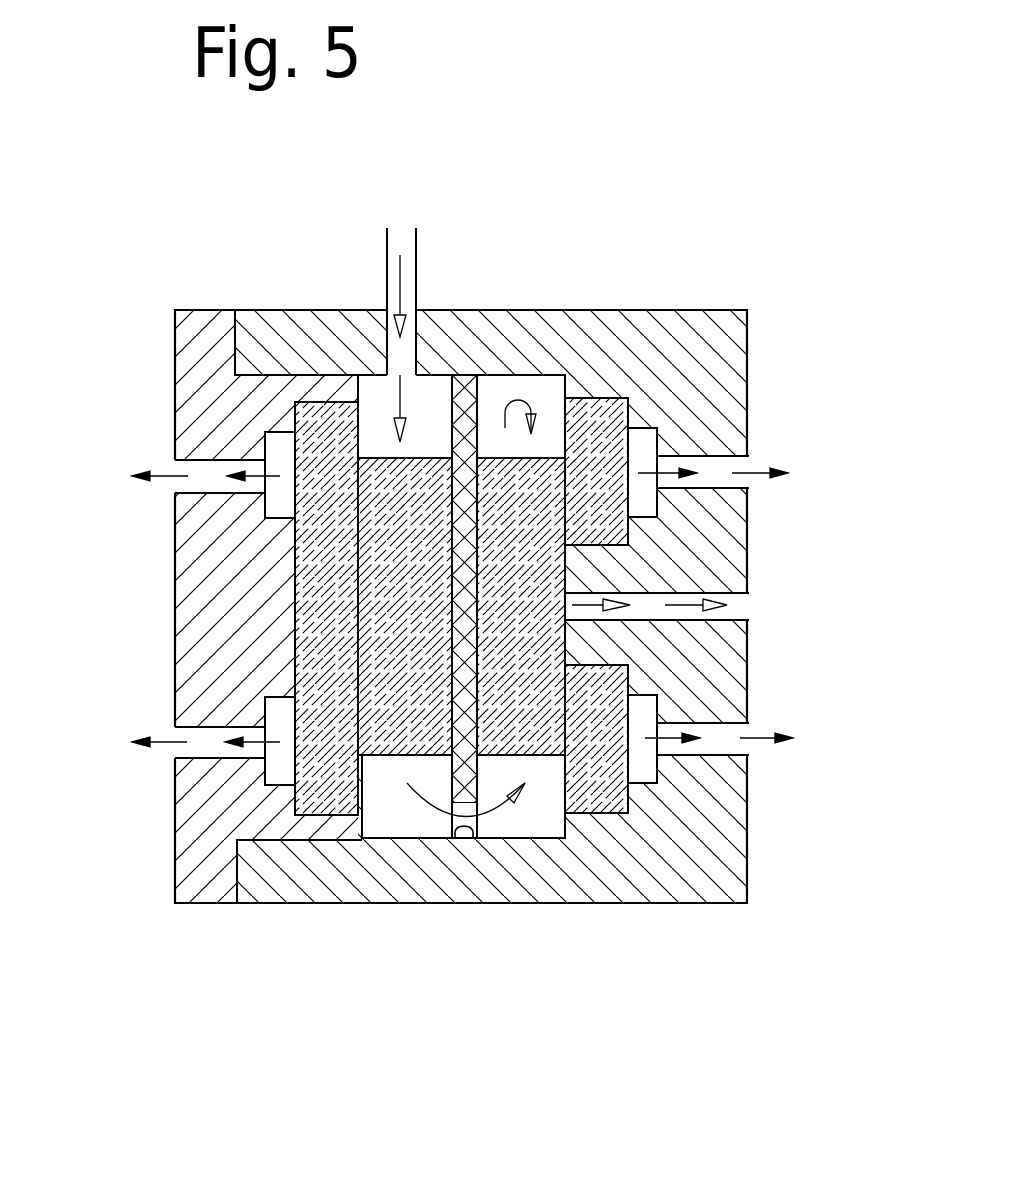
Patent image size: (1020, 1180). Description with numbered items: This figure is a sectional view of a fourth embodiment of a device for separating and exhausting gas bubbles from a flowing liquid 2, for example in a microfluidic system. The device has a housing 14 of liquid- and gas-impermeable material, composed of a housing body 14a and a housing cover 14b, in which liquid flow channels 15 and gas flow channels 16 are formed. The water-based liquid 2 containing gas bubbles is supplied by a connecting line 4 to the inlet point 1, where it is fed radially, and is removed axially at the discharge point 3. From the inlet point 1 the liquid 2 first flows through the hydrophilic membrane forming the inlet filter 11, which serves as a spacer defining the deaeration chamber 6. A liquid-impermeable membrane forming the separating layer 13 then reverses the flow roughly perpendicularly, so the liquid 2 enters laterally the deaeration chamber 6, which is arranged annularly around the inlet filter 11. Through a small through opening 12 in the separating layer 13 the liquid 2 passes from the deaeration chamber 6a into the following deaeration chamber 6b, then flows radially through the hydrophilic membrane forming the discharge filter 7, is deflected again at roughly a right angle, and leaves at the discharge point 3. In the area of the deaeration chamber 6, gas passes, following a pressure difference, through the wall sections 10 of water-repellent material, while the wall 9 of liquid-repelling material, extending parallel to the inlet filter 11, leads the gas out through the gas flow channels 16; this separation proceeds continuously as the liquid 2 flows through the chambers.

The inlet point 1 is at (417, 310).
The liquid 2 is at (400, 285).
The discharge point 3 is at (627, 620).
The connecting line 4 is at (417, 260).
The deaeration chamber 6 is at (375, 390).
The deaeration chamber 6a is at (385, 817).
The deaeration chamber 6b is at (532, 820).
The discharge filter 7 is at (532, 733).
The wall 9 is at (328, 537).
The wall section 10 is at (605, 420).
The inlet filter 11 is at (387, 567).
The through opening 12 is at (468, 840).
The separating layer 13 is at (455, 623).
The housing 14 is at (622, 214).
The housing body 14a is at (697, 340).
The housing cover 14b is at (207, 332).
The liquid flow channel 15 is at (677, 593).
The gas flow channel 16 is at (700, 457).